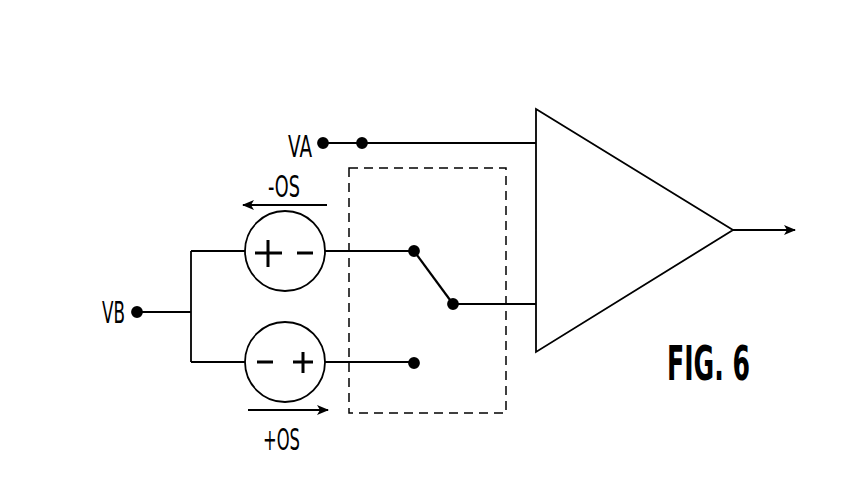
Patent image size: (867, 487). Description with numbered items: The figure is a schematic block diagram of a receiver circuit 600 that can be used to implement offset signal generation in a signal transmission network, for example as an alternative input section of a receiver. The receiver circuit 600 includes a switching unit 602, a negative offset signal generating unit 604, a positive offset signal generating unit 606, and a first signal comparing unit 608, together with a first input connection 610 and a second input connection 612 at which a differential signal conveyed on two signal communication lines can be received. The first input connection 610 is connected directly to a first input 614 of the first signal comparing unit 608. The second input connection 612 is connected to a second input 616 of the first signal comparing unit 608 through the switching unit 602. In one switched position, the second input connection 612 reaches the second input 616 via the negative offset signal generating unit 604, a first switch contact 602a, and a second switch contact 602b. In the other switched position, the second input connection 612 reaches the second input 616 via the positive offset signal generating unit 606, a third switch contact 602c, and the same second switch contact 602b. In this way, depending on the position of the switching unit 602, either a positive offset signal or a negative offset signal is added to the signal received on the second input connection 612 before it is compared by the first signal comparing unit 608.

The receiver circuit 600 is at (680, 101).
The switching unit 602 is at (490, 185).
The first switch contact 602a is at (416, 249).
The second switch contact 602b is at (455, 302).
The third switch contact 602c is at (418, 367).
The negative offset signal generating unit 604 is at (246, 240).
The positive offset signal generating unit 606 is at (245, 377).
The first signal comparing unit 608 is at (658, 192).
The first input connection 610 is at (323, 140).
The second input connection 612 is at (137, 312).
The first input 614 is at (577, 137).
The second input 616 is at (540, 305).